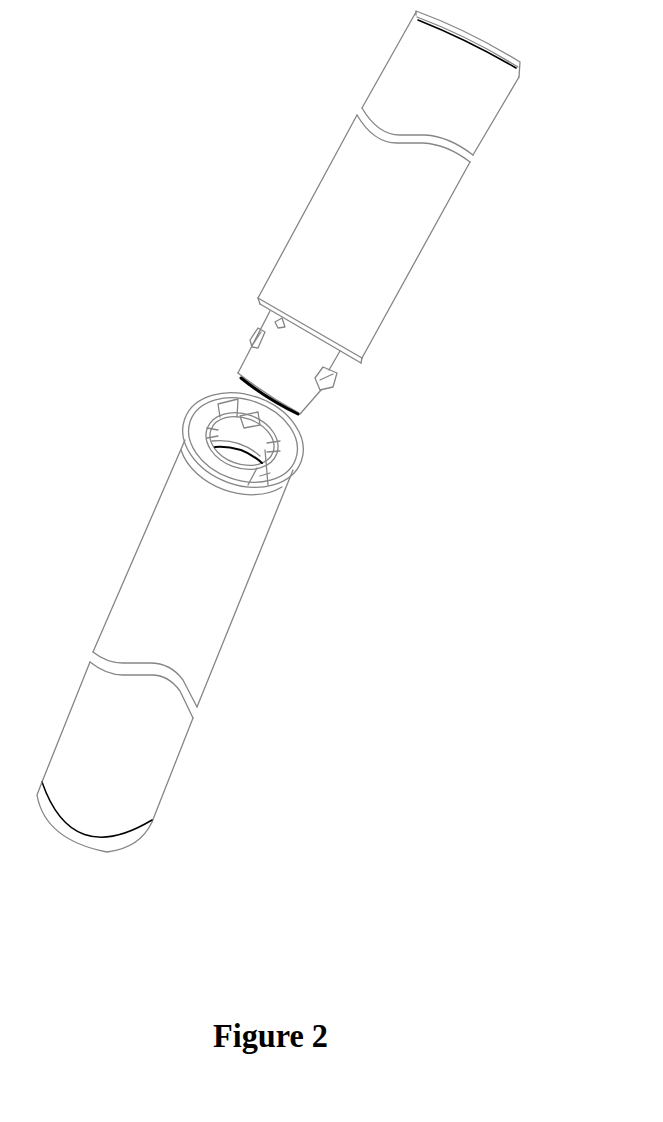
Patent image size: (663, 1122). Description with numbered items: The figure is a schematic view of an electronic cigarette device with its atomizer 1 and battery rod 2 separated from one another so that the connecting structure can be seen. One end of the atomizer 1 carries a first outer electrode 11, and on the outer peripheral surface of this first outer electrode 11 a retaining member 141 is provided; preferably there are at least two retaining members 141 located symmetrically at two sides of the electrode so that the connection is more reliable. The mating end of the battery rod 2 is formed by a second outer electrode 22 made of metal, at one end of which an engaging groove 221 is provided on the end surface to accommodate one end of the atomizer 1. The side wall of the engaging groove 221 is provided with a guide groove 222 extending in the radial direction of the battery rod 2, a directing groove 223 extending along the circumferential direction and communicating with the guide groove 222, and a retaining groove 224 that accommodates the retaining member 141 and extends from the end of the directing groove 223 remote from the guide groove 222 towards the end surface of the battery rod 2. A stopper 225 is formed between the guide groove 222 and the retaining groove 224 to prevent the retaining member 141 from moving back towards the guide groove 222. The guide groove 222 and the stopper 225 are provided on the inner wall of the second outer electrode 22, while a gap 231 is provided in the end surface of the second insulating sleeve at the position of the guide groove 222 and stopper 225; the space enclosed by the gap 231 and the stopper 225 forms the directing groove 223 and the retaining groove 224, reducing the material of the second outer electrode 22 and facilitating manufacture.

The atomizer 1 is at (307, 208).
The first outer electrode 11 is at (240, 368).
The retaining member 141 is at (252, 336).
The battery rod 2 is at (218, 635).
The second outer electrode 22 is at (197, 427).
The engaging groove 221 is at (246, 465).
The guide groove 222 is at (230, 415).
The directing groove 223 is at (238, 438).
The retaining groove 224 is at (265, 445).
The stopper 225 is at (247, 423).
The gap 231 is at (238, 454).